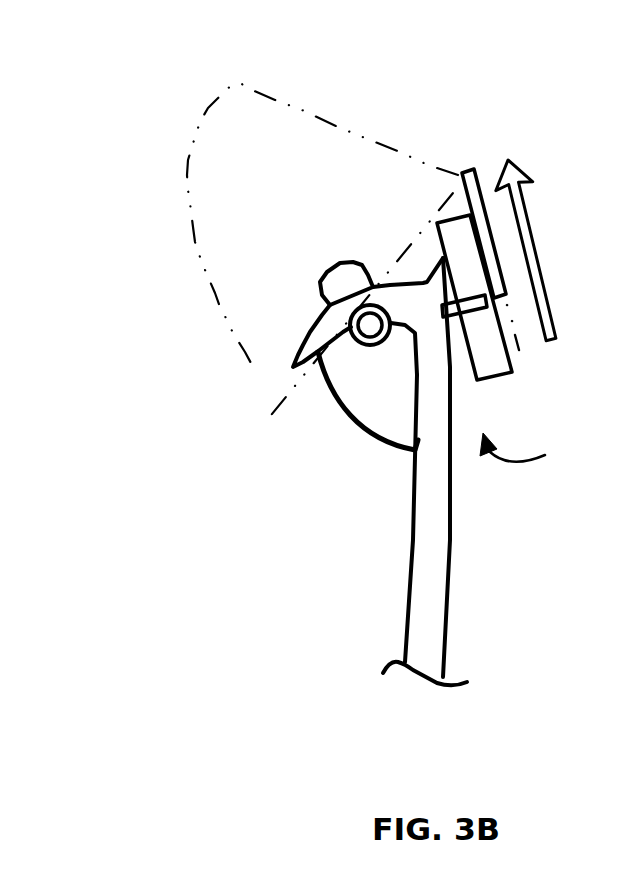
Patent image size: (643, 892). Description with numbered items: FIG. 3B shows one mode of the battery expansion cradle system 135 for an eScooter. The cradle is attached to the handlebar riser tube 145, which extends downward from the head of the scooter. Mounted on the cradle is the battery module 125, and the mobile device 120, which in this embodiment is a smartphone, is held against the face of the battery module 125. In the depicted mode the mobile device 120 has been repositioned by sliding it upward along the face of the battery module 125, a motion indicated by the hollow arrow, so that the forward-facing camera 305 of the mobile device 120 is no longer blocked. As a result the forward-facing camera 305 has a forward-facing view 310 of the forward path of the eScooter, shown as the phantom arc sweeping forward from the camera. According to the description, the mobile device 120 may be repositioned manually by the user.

The forward-facing view 310 is at (227, 92).
The forward-facing camera 305 is at (463, 177).
The mobile device 120 is at (473, 172).
The battery module 125 is at (497, 378).
The battery expansion cradle system 135 is at (538, 450).
The handlebar riser tube 145 is at (408, 615).